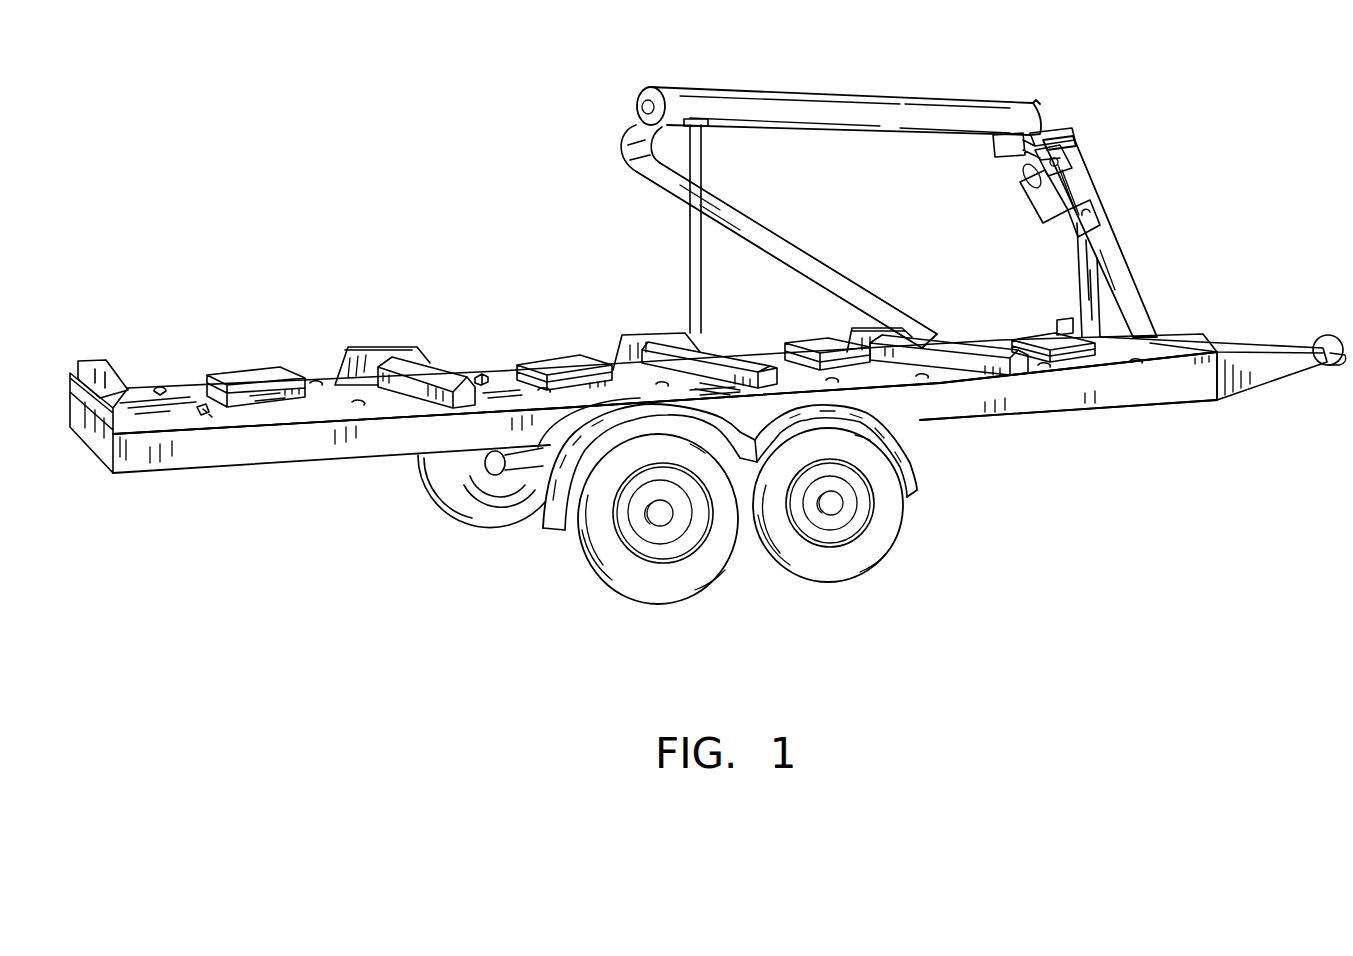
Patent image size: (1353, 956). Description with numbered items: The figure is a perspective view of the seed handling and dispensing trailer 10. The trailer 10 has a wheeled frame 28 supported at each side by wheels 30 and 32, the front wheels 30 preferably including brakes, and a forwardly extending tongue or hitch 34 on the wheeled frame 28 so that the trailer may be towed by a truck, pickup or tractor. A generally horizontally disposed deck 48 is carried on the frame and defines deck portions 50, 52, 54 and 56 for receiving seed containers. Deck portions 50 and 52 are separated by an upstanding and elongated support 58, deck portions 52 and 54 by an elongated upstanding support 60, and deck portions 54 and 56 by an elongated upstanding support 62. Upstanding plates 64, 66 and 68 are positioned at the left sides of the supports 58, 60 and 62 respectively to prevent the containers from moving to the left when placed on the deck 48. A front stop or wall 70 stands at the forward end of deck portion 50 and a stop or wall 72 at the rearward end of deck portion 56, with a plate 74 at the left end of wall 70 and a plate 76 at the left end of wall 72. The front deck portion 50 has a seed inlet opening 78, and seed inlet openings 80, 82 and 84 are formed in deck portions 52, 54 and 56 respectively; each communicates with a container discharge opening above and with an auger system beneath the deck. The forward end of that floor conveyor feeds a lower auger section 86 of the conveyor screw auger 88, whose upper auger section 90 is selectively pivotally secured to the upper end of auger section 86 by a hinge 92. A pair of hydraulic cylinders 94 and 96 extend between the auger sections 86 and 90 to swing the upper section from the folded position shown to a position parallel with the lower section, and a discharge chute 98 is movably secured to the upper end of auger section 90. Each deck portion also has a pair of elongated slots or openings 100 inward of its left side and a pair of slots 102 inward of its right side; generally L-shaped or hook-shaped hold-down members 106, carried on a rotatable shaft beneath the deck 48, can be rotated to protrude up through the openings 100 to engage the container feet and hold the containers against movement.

The trailer 10 is at (497, 224).
The wheeled frame 28 is at (535, 535).
The front wheels 30 is at (867, 547).
The wheels 32 is at (467, 503).
The tongue or hitch 34 is at (1279, 337).
The deck 48 is at (318, 413).
The deck portion 50 is at (1100, 363).
The deck portion 52 is at (903, 378).
The deck portion 54 is at (495, 380).
The deck portion 56 is at (192, 397).
The upstanding elongated support 58 is at (960, 347).
The elongated upstanding support 60 is at (730, 357).
The elongated upstanding support 62 is at (423, 373).
The upstanding plate 64 is at (863, 327).
The upstanding plate 66 is at (647, 335).
The upstanding plate 68 is at (372, 350).
The front stop or wall 70 is at (1133, 337).
The stop or wall 72 is at (115, 420).
The plate 74 is at (1066, 320).
The plate 76 is at (95, 366).
The seed inlet opening 78 is at (1080, 362).
The seed inlet opening 80 is at (820, 340).
The seed inlet opening 82 is at (553, 370).
The seed inlet opening 84 is at (240, 370).
The lower auger section 86 is at (1080, 186).
The conveyor screw auger 88 is at (1090, 162).
The upper auger section 90 is at (850, 100).
The hinge 92 is at (1062, 133).
The hydraulic cylinder 94 is at (1030, 176).
The hydraulic cylinder 96 is at (1040, 214).
The discharge chute 98 is at (752, 223).
The elongated slots or openings 100 is at (160, 385).
The elongated slots or openings 102 is at (203, 416).
The hold-down members 106 is at (478, 374).